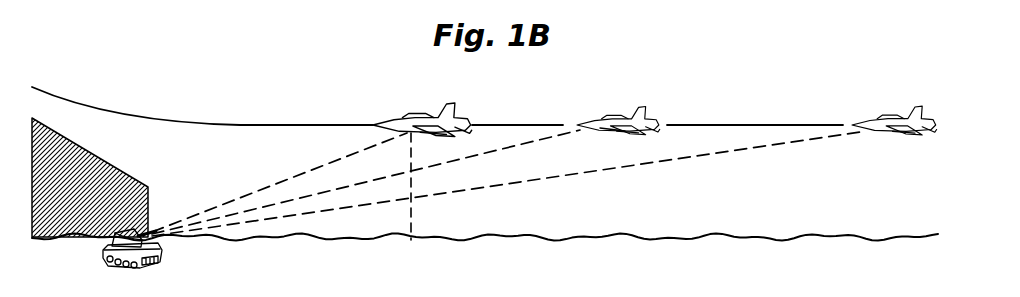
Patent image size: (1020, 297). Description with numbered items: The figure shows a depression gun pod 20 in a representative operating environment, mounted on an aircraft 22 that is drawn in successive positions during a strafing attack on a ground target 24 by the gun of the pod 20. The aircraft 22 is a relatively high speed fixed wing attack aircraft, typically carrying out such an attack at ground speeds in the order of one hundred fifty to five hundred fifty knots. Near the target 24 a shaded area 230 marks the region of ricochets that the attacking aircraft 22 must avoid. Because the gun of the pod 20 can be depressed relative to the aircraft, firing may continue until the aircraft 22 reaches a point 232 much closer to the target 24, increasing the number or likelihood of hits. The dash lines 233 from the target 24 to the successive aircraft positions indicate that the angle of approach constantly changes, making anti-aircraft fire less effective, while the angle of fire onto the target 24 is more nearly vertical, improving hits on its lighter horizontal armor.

The ricochet area 230 is at (126, 174).
The dash lines 233 is at (307, 168).
The ground target 24 is at (155, 258).
The point 232 is at (392, 126).
The aircraft 22 is at (637, 112).
The depression gun pod 20 is at (607, 132).